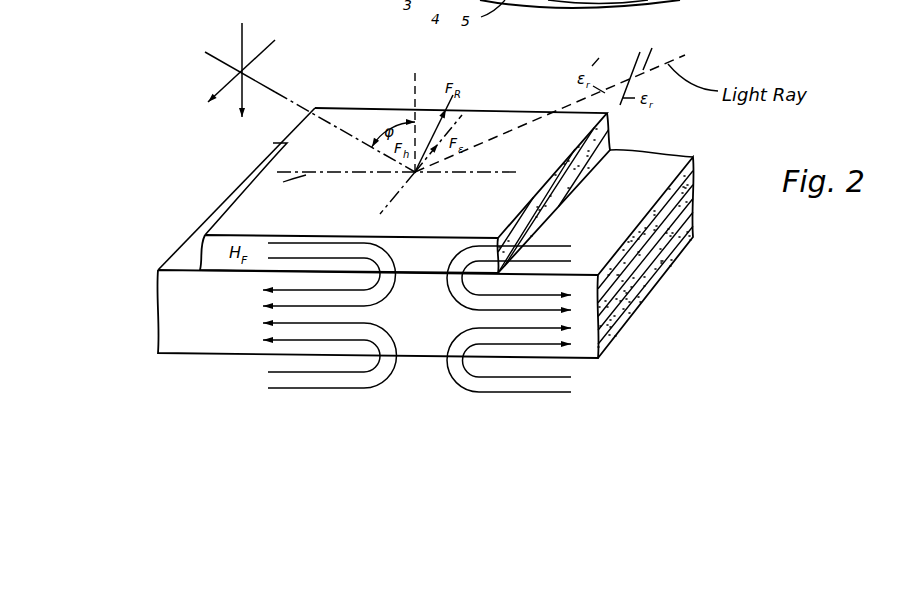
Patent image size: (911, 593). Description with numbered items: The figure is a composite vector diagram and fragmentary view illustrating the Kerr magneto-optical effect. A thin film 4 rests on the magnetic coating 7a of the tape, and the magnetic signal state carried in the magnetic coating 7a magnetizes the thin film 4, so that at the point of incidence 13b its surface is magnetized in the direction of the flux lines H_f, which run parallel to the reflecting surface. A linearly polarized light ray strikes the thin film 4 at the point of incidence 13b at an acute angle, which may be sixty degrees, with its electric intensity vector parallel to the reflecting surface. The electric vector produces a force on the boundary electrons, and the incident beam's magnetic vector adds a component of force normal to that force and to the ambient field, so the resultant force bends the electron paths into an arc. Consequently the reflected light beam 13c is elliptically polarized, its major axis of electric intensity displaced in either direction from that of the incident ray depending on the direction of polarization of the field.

The thin film 4 is at (250, 208).
The magnetic coating 7a is at (162, 292).
The point of incidence 13b is at (415, 175).
The reflected light beam 13c is at (583, 100).